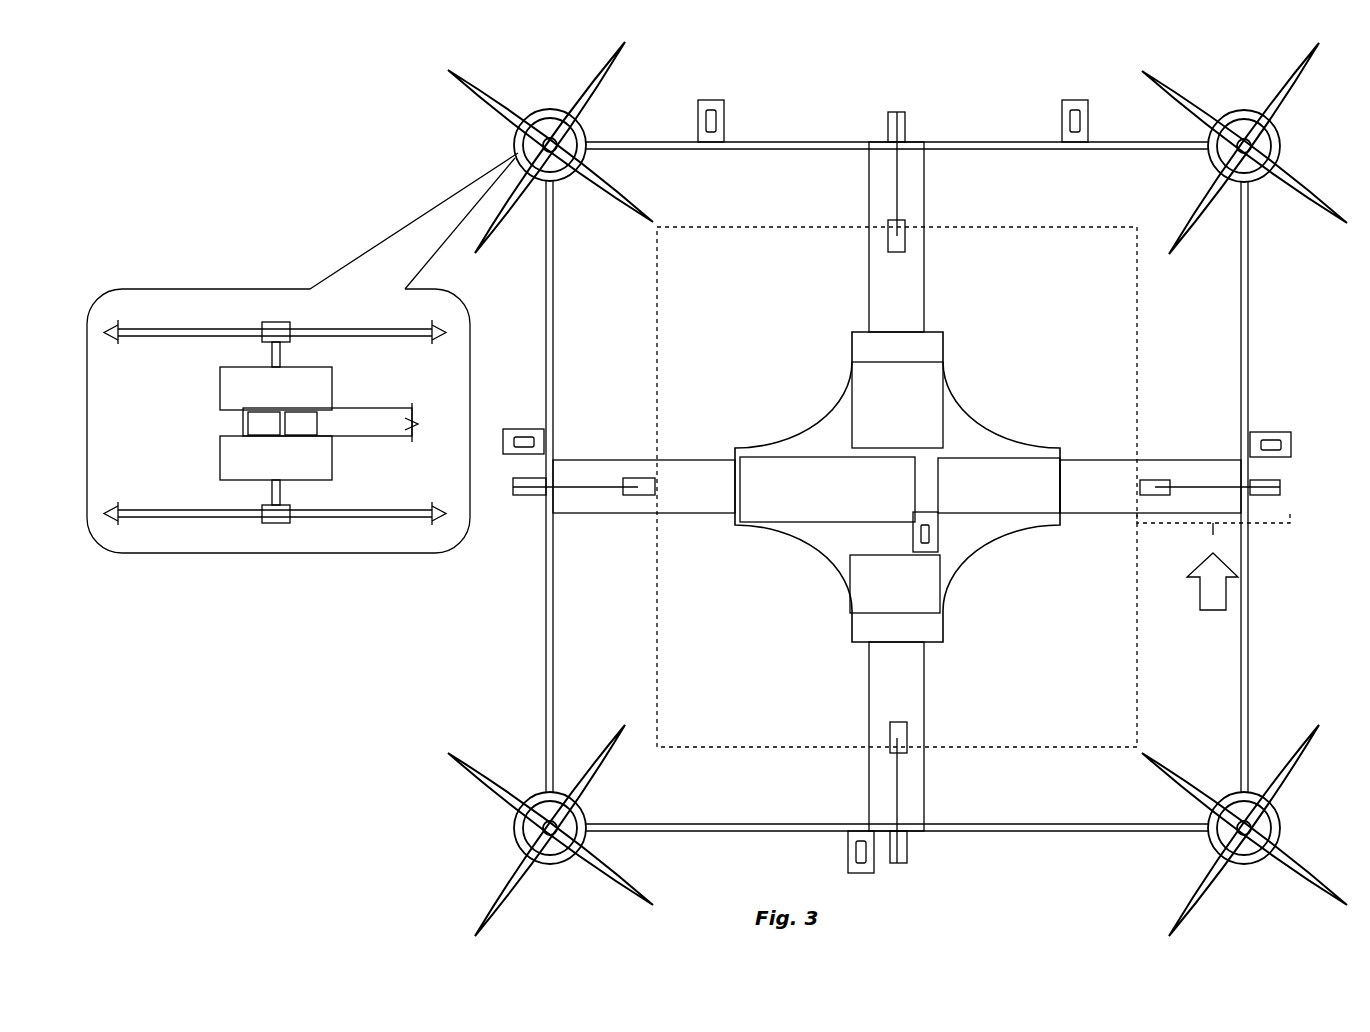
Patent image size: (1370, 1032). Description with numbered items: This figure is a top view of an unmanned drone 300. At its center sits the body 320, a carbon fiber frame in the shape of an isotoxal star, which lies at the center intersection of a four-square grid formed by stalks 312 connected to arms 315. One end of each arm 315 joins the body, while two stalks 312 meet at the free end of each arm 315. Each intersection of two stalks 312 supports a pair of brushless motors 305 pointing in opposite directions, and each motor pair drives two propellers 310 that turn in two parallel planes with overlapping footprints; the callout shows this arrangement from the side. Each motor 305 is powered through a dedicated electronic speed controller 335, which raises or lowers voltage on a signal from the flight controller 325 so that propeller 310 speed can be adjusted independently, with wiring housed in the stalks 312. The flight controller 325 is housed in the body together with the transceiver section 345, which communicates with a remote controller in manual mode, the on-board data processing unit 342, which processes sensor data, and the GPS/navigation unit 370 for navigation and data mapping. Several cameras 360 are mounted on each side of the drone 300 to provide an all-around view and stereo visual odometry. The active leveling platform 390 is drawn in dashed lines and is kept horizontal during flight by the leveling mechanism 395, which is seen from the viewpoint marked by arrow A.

The unmanned drone 300 is at (330, 72).
The brushless motor 305 is at (555, 108).
The propeller 310 is at (455, 68).
The stalk 312 is at (968, 142).
The arm 315 is at (872, 270).
The body 320 is at (817, 413).
The flight controller 325 is at (881, 444).
The electronic speed controller 335 is at (253, 412).
The on-board data processing unit 342 is at (889, 516).
The transceiver section 345 is at (1047, 502).
The camera 360 is at (712, 108).
The GPS/navigation unit 370 is at (934, 611).
The active leveling platform 390 is at (655, 325).
The leveling mechanism 395 is at (1197, 540).